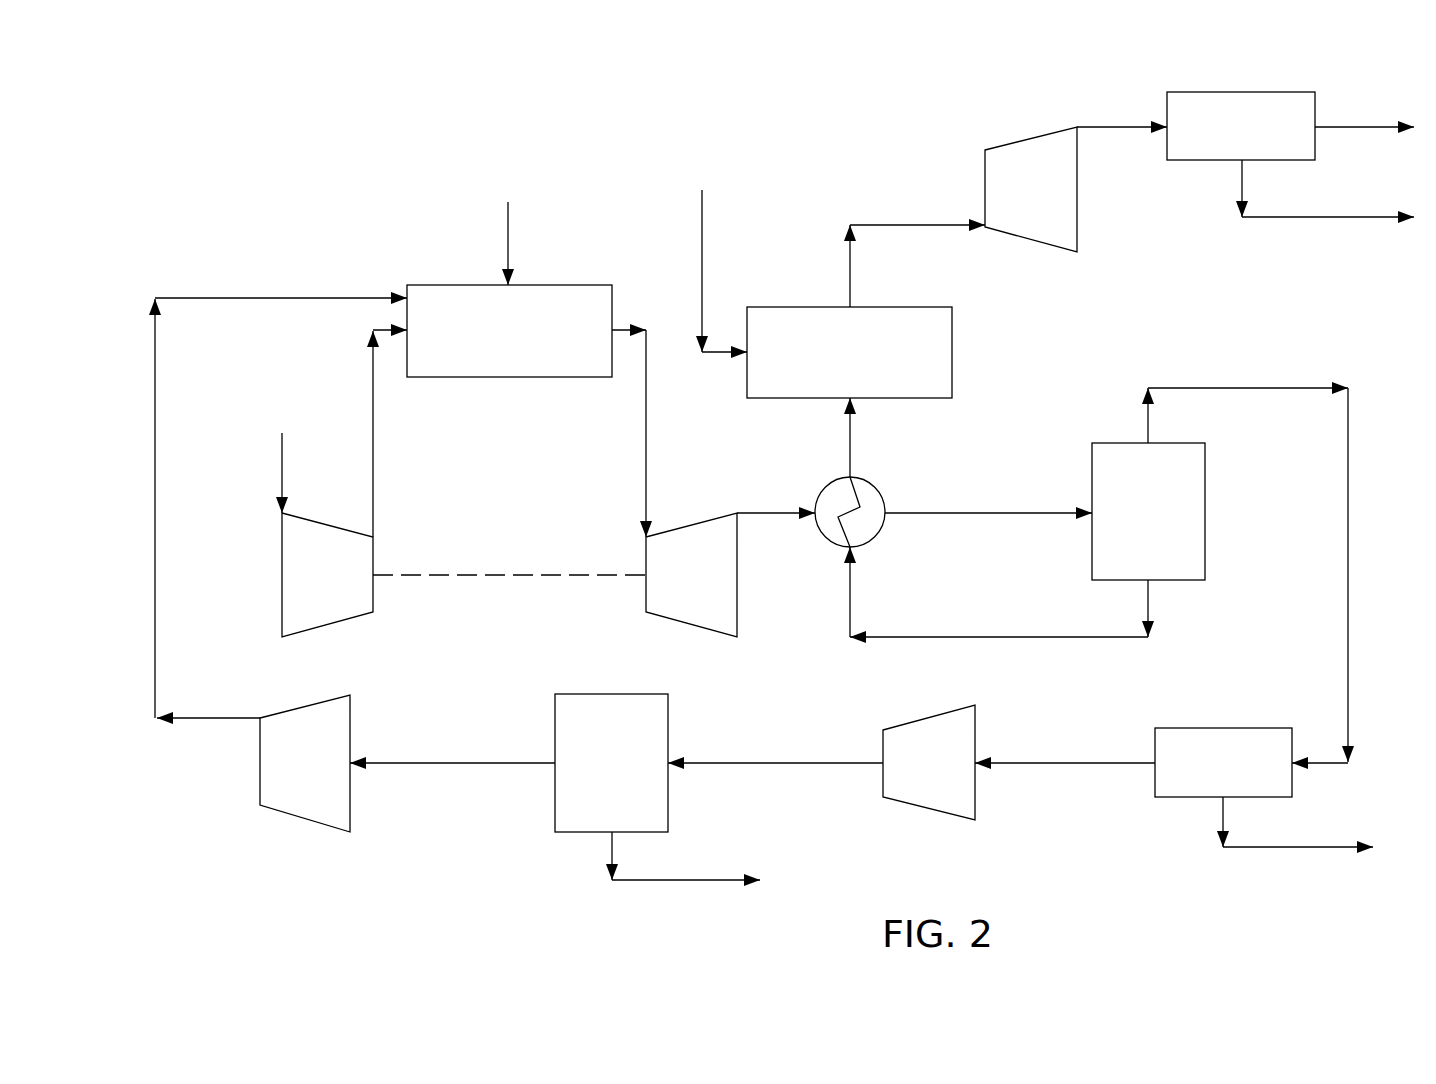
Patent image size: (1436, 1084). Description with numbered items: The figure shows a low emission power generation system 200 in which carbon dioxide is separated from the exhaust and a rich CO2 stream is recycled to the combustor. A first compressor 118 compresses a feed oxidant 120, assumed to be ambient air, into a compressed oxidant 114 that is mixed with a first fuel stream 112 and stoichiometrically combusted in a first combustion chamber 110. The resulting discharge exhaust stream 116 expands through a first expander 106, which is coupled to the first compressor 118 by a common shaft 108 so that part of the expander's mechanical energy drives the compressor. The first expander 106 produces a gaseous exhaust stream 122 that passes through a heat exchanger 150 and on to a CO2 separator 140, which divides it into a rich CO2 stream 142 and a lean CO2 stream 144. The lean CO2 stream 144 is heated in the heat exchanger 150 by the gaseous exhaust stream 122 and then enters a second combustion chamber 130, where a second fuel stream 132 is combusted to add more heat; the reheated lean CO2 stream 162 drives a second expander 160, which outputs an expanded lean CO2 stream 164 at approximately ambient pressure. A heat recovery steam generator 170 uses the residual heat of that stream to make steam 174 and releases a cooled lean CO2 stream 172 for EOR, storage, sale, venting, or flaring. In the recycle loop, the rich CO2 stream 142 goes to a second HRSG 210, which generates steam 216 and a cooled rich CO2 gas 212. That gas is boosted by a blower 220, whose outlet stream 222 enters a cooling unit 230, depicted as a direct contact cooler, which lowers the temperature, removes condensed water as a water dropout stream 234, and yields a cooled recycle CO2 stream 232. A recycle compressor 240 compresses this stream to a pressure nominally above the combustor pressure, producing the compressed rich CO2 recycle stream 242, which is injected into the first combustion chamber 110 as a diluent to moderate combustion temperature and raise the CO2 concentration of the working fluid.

The power generation system 200 is at (386, 94).
The first expander 106 is at (712, 587).
The common shaft 108 is at (497, 573).
The first combustion chamber 110 is at (530, 346).
The first fuel stream 112 is at (508, 212).
The compressed oxidant 114 is at (373, 433).
The discharge exhaust stream 116 is at (645, 448).
The first compressor 118 is at (339, 587).
The feed oxidant 120 is at (282, 457).
The gaseous exhaust stream 122 is at (765, 510).
The second combustion chamber 130 is at (871, 366).
The second fuel stream 132 is at (702, 218).
The CO2 separator 140 is at (1169, 526).
The rich CO2 stream 142 is at (1255, 387).
The lean CO2 stream 144 is at (852, 438).
The heat exchanger 150 is at (822, 535).
The second expander 160 is at (1052, 201).
The reheated lean CO2 stream 162 is at (887, 225).
The expanded lean CO2 stream 164 is at (1108, 125).
The heat recovery steam generator 170 is at (1261, 141).
The cooled lean CO2 stream 172 is at (1368, 125).
The steam 174 is at (1328, 220).
The second HRSG 210 is at (1244, 777).
The cooled rich CO2 gas 212 is at (1080, 760).
The steam 216 is at (1313, 848).
The blower 220 is at (951, 775).
The stream 222 is at (783, 760).
The cooling unit 230 is at (631, 772).
The cooled recycle CO2 stream 232 is at (437, 760).
The water dropout stream 234 is at (697, 882).
The recycle compressor 240 is at (326, 770).
The compressed rich CO2 recycle stream 242 is at (283, 295).